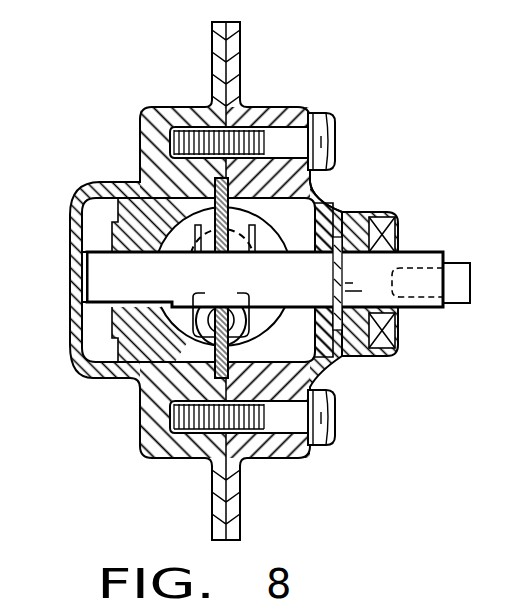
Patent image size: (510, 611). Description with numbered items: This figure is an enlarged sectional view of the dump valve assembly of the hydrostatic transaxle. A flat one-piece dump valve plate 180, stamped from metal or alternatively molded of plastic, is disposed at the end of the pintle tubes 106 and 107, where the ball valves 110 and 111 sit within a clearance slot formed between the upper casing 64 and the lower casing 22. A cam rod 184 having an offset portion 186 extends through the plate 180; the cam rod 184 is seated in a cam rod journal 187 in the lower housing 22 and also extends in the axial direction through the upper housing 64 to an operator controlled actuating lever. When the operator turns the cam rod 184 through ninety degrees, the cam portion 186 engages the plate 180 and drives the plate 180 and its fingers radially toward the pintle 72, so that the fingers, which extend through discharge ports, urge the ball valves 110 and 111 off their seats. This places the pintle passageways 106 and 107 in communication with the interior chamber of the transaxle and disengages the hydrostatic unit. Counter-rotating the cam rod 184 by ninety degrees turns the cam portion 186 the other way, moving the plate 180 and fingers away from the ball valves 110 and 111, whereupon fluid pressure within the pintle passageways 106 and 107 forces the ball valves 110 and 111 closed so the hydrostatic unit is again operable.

The lower casing 22 is at (150, 390).
The upper casing 64 is at (350, 213).
The pintle 72 is at (139, 186).
The pintle tube 106 is at (340, 364).
The pintle tube 107 is at (332, 197).
The ball valve 110 is at (250, 338).
The ball valve 111 is at (272, 224).
The dump valve plate 180 is at (163, 337).
The cam rod 184 is at (103, 278).
The offset portion 186 is at (247, 283).
The cam rod journal 187 is at (70, 251).